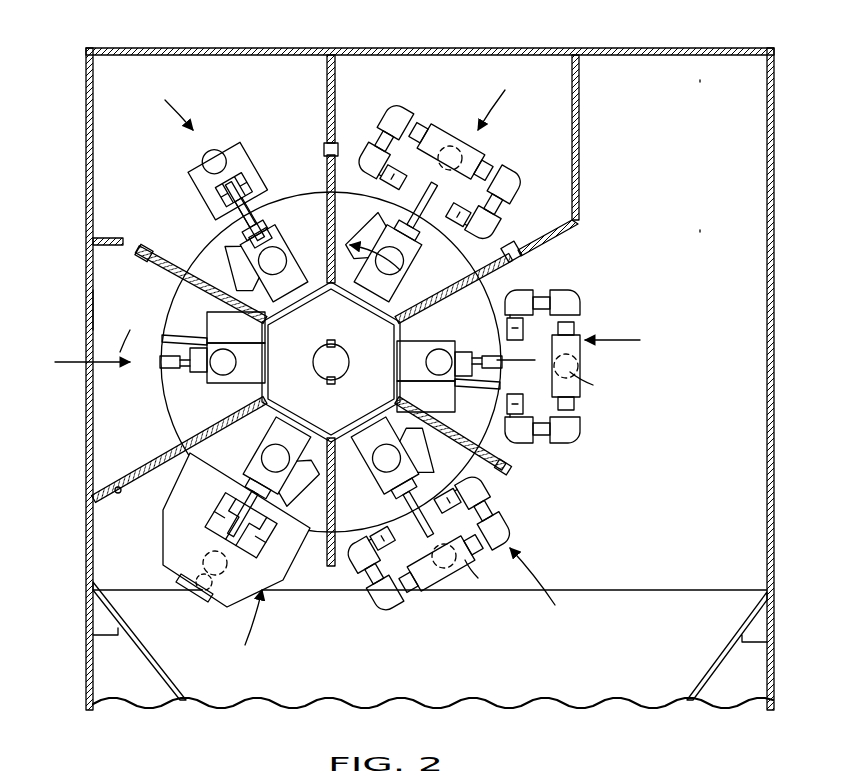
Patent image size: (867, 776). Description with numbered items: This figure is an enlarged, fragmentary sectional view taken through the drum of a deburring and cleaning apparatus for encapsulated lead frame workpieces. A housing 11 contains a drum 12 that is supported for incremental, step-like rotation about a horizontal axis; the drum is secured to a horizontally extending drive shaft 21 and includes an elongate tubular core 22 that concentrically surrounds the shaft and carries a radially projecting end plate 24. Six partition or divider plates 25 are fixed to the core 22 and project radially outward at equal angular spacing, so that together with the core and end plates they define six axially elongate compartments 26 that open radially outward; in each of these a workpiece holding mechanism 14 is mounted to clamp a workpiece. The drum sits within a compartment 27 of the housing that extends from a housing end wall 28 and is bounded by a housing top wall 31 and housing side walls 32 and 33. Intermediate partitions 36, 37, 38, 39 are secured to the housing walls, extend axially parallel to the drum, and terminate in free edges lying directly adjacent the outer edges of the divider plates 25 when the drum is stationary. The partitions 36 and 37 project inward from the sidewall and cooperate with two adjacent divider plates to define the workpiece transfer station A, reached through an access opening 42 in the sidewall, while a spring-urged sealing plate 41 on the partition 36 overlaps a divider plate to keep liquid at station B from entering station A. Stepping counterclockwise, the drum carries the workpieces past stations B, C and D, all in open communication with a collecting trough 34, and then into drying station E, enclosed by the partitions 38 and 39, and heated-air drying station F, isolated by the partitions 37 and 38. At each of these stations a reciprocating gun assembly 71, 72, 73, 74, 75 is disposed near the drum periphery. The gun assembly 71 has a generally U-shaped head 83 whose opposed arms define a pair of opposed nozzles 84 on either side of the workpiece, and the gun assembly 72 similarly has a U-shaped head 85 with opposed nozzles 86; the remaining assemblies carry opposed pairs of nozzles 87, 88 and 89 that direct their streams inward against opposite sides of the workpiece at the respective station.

The housing 11 is at (688, 48).
The drum 12 is at (470, 470).
The workpiece holding mechanism 14 is at (185, 328).
The drive shaft 21 is at (320, 365).
The tubular core 22 is at (352, 305).
The end plate 24 is at (185, 420).
The divider plate 25 is at (325, 158).
The compartment 26 is at (346, 160).
The compartment 27 is at (695, 135).
The housing end wall 28 is at (679, 243).
The housing top wall 31 is at (552, 48).
The housing side wall 32 is at (774, 302).
The housing side wall 33 is at (90, 194).
The collecting trough 34 is at (697, 690).
The housing partition 36 is at (93, 497).
The housing partition 37 is at (93, 244).
The housing partition 38 is at (327, 76).
The housing partition 39 is at (578, 82).
The sealing plate 41 is at (172, 500).
The access opening 42 is at (90, 330).
The gun assembly 71 is at (224, 607).
The gun assembly 72 is at (432, 597).
The gun assembly 73 is at (582, 432).
The gun assembly 74 is at (447, 133).
The gun assembly 75 is at (205, 178).
The U-shaped head 83 is at (170, 568).
The nozzle 84 is at (250, 527).
The U-shaped head 85 is at (450, 575).
The nozzle 86 is at (429, 544).
The nozzle 87 is at (542, 366).
The nozzle 88 is at (440, 172).
The nozzle 89 is at (242, 190).